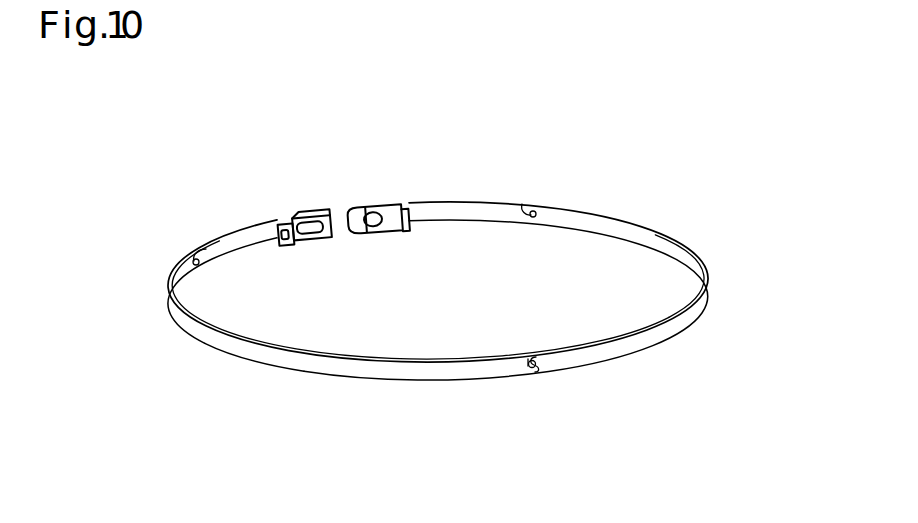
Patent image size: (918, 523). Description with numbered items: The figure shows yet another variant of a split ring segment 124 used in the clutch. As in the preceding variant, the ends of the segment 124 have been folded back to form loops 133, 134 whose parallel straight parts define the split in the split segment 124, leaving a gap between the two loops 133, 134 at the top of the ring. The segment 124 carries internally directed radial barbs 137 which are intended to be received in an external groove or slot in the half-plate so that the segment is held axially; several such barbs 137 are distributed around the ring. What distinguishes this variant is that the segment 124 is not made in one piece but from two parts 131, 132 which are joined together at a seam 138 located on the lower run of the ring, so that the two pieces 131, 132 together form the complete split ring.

The split segment 124 is at (617, 190).
The first part of segment 131 is at (680, 238).
The second part of segment 132 is at (245, 357).
The loop 133 is at (363, 206).
The loop 134 is at (306, 210).
The radial barb 137 is at (200, 250).
The seam 138 is at (533, 376).